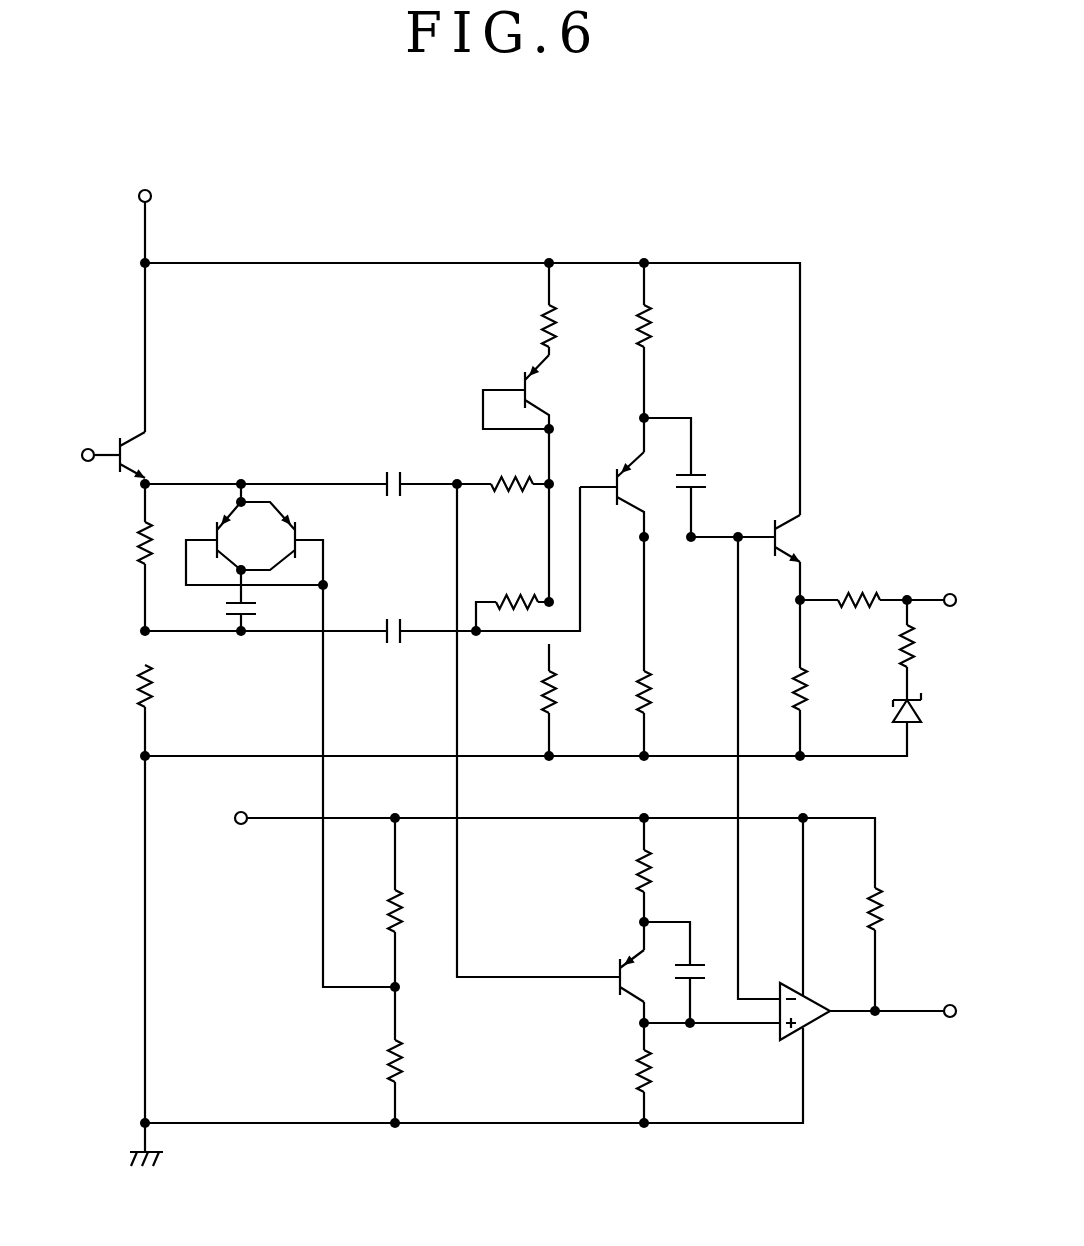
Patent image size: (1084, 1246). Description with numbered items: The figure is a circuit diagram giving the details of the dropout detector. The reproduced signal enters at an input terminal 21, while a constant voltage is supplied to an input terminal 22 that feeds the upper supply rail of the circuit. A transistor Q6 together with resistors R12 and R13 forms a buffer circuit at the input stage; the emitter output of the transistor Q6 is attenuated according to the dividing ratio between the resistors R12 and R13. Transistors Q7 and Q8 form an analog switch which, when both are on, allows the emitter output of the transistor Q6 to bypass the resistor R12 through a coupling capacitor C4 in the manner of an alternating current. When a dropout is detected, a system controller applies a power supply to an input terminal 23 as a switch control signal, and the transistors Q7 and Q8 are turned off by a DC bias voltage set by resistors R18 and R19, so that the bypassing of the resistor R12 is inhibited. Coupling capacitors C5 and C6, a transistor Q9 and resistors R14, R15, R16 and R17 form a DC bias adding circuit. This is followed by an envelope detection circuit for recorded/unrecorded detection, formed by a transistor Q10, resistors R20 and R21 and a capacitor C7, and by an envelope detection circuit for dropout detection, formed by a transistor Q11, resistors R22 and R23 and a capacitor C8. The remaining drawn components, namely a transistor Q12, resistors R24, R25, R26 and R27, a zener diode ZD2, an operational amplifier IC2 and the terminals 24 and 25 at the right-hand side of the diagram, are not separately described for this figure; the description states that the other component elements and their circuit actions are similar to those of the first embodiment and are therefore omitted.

The input terminal 21 is at (89, 449).
The input terminal 22 is at (151, 196).
The input terminal 23 is at (241, 824).
The output terminal 24 is at (950, 594).
The output terminal 25 is at (950, 1005).
The transistor Q6 is at (147, 457).
The transistor Q7 is at (254, 540).
The transistor Q8 is at (282, 540).
The transistor Q9 is at (532, 392).
The transistor Q10 is at (626, 494).
The transistor Q11 is at (550, 968).
The transistor Q12 is at (789, 540).
The resistor R12 is at (125, 542).
The resistor R13 is at (125, 687).
The resistor R14 is at (529, 323).
The resistor R15 is at (512, 466).
The resistor R16 is at (517, 583).
The resistor R17 is at (529, 692).
The resistor R18 is at (416, 910).
The resistor R19 is at (416, 1059).
The resistor R20 is at (666, 323).
The resistor R21 is at (666, 692).
The resistor R22 is at (622, 870).
The resistor R23 is at (622, 1070).
The resistor R24 is at (824, 690).
The resistor R25 is at (859, 581).
The resistor R26 is at (929, 645).
The resistor R27 is at (853, 908).
The coupling capacitor C4 is at (241, 642).
The coupling capacitor C5 is at (392, 463).
The coupling capacitor C6 is at (392, 612).
The capacitor C7 is at (700, 459).
The capacitor C8 is at (697, 953).
The zener diode ZD2 is at (924, 731).
The operational amplifier IC2 is at (812, 1030).